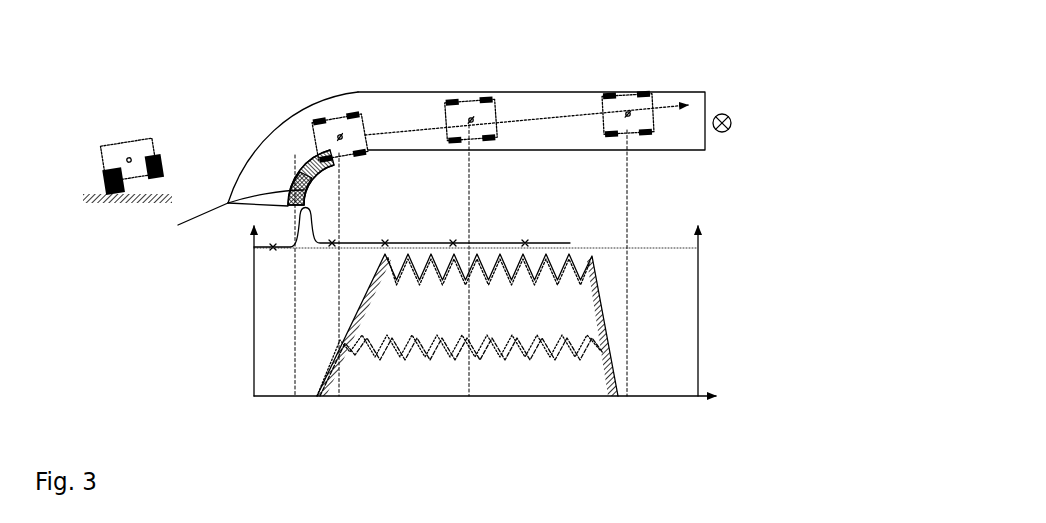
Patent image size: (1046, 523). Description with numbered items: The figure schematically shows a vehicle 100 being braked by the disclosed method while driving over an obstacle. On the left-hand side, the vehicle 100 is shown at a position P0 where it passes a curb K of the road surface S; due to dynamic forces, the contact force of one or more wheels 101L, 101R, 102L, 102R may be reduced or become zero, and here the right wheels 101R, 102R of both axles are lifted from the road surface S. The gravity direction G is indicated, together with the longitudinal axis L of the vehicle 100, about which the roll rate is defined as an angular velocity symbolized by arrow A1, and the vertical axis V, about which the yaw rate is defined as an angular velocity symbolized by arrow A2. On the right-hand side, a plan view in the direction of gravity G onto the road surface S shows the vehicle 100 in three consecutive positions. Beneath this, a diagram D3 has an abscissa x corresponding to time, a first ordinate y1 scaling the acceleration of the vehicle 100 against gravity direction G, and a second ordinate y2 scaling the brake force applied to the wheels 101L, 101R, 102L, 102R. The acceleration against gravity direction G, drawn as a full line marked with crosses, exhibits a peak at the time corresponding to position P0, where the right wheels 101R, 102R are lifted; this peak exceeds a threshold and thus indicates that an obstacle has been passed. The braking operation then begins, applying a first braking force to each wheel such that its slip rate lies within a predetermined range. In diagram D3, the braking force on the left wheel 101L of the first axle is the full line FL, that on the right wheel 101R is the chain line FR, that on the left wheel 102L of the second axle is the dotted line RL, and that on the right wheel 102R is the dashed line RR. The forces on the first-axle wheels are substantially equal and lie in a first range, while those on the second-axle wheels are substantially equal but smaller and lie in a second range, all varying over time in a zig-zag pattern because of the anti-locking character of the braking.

The vehicle 100 is at (153, 148).
The left wheel of the first axle 101L is at (638, 96).
The right wheel of the first axle 101R is at (642, 136).
The left wheel of the second axle 102L is at (605, 96).
The right wheel of the second axle 102R is at (612, 136).
The road surface S is at (540, 100).
The vertical axis V is at (317, 147).
The gravity direction G is at (732, 123).
The position P0 is at (102, 127).
The arrow A1 is at (113, 157).
The arrow A2 is at (349, 130).
The longitudinal axis L is at (130, 170).
The curb K is at (152, 200).
The diagram D3 is at (185, 357).
The full line FL is at (592, 256).
The chain line FR is at (498, 285).
The dotted line RL is at (424, 313).
The dashed line RR is at (455, 352).
The abscissa x is at (670, 397).
The first ordinate y1 is at (254, 270).
The second ordinate y2 is at (698, 275).